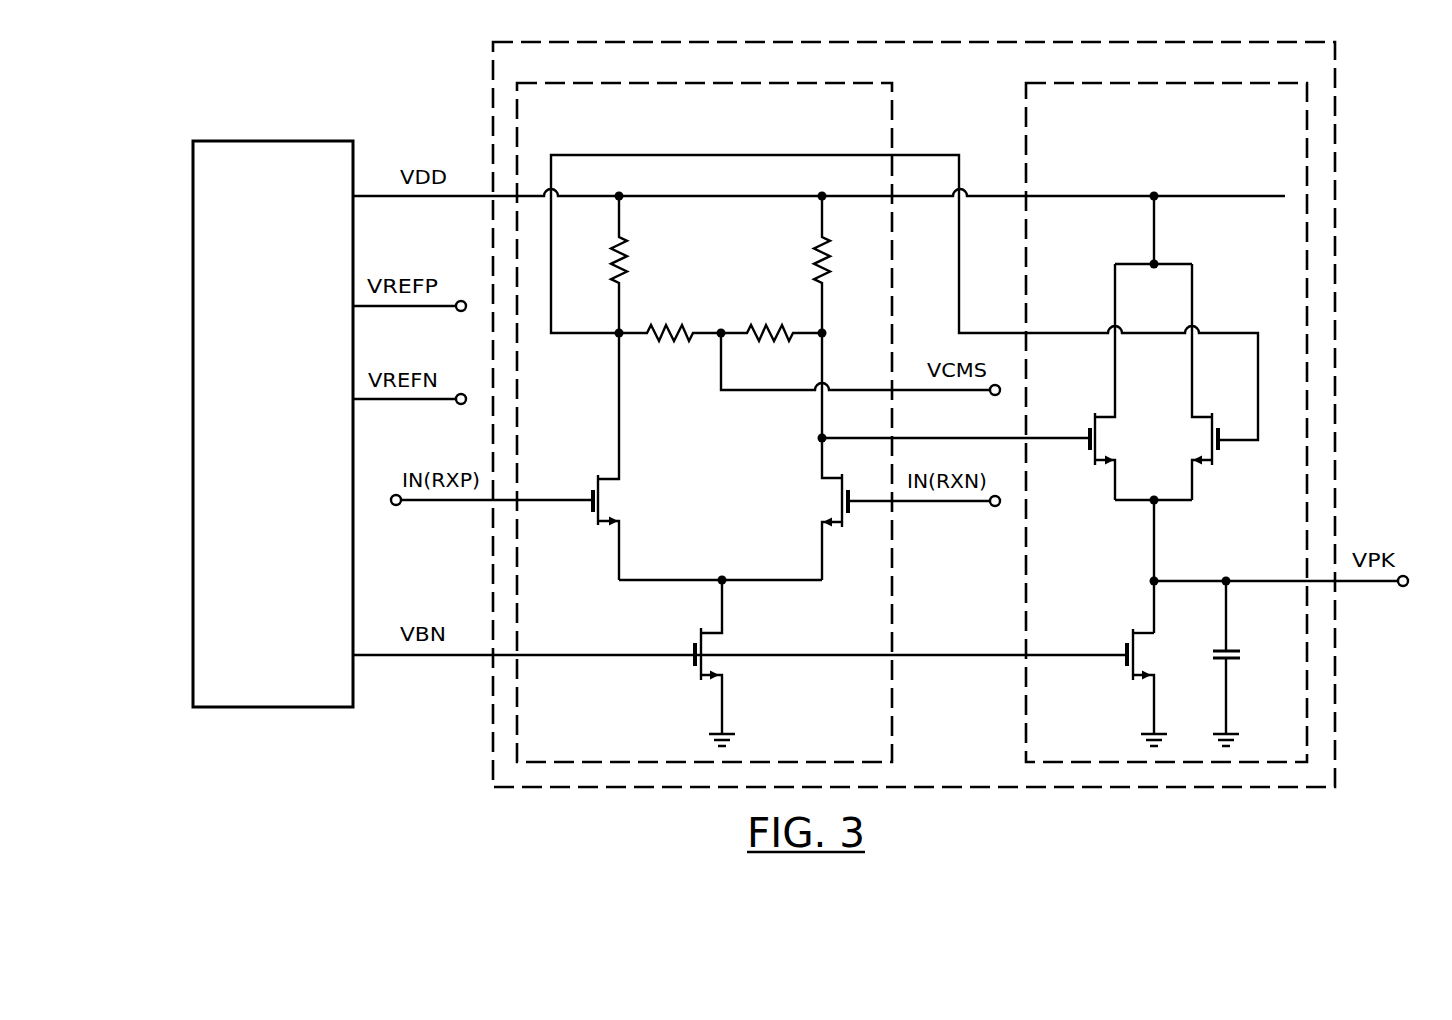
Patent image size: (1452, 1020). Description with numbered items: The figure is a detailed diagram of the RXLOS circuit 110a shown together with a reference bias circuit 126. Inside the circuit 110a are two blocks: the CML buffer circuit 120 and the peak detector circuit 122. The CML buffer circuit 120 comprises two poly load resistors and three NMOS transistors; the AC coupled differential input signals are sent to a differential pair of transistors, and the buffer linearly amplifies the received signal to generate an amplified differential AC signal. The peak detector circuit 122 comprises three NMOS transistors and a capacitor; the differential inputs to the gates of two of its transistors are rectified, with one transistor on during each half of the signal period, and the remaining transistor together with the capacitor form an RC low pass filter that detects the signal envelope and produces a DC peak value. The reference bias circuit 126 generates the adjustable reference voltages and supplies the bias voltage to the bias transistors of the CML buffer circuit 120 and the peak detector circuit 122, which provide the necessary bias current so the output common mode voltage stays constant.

The reference bias circuit 126 is at (273, 141).
The RXLOS circuit 110a is at (607, 42).
The CML buffer circuit 120 is at (627, 83).
The peak detector circuit 122 is at (1098, 83).